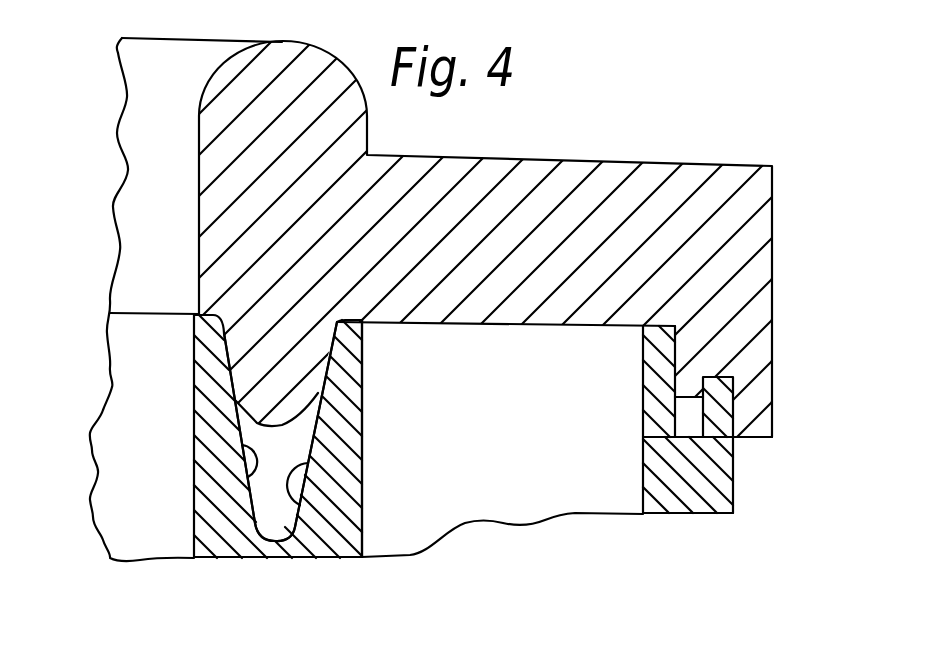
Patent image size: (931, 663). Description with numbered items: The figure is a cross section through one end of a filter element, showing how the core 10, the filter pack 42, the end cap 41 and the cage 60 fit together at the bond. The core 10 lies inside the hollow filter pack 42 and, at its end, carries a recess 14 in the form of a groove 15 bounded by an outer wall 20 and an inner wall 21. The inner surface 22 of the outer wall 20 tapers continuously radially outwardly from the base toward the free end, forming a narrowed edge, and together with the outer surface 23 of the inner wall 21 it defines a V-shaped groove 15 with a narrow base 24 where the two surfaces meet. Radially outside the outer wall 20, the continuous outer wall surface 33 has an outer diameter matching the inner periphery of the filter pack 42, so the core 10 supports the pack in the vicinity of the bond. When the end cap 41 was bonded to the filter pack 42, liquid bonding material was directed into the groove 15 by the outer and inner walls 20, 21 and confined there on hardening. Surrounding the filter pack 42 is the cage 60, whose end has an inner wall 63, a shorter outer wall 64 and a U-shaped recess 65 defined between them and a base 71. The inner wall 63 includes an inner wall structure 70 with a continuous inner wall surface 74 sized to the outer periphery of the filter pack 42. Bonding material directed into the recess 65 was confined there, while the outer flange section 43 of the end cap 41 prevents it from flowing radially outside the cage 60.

The core 10 is at (123, 525).
The recess 14 is at (273, 508).
The groove 15 is at (294, 492).
The outer wall 20 is at (343, 434).
The inner wall 21 is at (212, 390).
The inner surface 22 is at (300, 505).
The outer surface 23 is at (212, 480).
The narrow base 24 is at (275, 528).
The continuous outer wall surface 33 is at (363, 380).
The end cap 41 is at (673, 193).
The filter pack 42 is at (505, 495).
The outer flange section 43 is at (757, 427).
The cage 60 is at (673, 502).
The inner wall 63 is at (773, 193).
The outer wall 64 is at (772, 268).
The recess 65 is at (733, 472).
The inner wall structure 70 is at (643, 358).
The base 71 is at (680, 428).
The continuous inner wall surface 74 is at (641, 418).